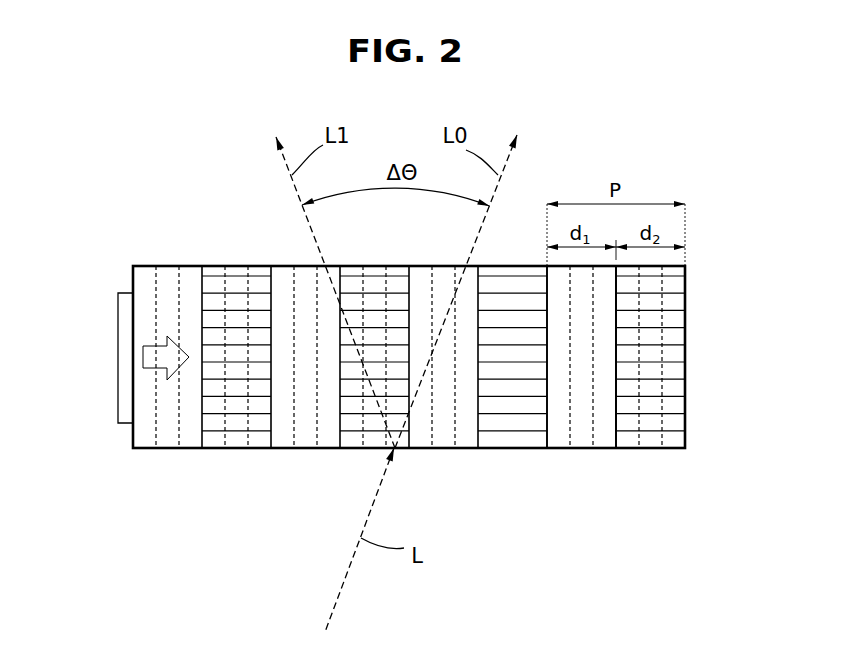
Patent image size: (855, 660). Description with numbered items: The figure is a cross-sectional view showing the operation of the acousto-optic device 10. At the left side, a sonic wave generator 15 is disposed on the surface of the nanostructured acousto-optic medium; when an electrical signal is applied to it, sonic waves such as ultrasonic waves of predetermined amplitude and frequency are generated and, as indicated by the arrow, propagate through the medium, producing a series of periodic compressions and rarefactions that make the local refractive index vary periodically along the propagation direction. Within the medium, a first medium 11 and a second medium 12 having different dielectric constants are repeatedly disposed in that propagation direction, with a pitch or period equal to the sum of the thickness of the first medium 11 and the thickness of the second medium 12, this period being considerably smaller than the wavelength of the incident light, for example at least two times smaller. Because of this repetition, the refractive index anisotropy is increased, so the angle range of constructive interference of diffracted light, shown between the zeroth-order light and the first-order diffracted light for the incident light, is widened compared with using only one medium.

The acousto-optic device 10 is at (193, 541).
The first medium 11 is at (581, 448).
The second medium 12 is at (648, 448).
The sonic wave generator 15 is at (122, 352).